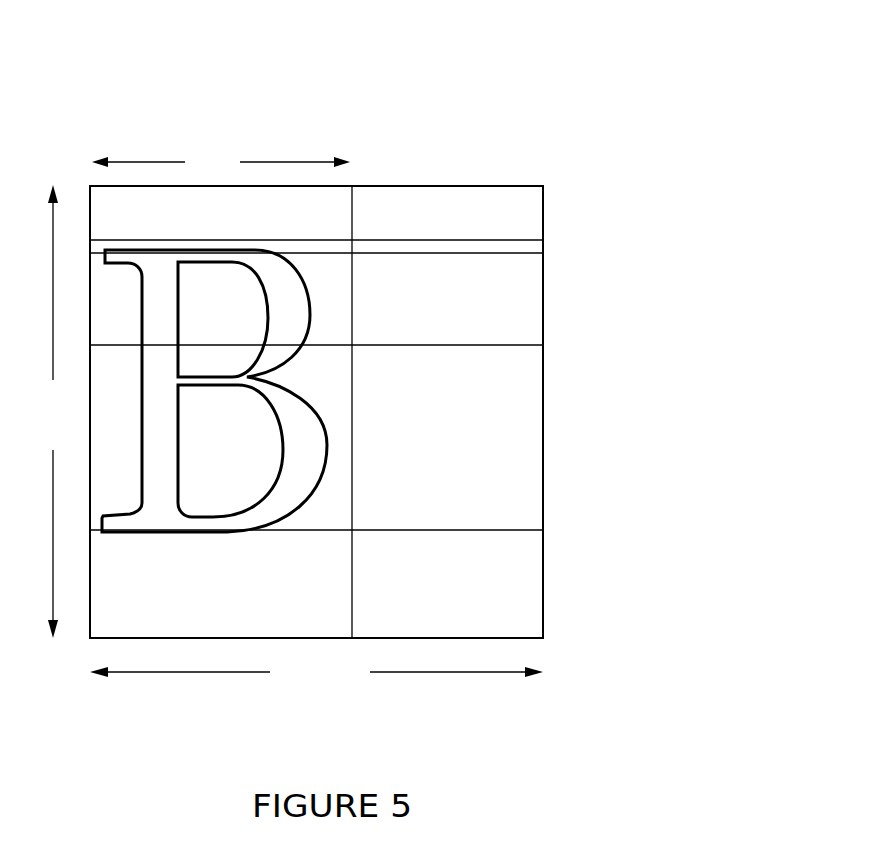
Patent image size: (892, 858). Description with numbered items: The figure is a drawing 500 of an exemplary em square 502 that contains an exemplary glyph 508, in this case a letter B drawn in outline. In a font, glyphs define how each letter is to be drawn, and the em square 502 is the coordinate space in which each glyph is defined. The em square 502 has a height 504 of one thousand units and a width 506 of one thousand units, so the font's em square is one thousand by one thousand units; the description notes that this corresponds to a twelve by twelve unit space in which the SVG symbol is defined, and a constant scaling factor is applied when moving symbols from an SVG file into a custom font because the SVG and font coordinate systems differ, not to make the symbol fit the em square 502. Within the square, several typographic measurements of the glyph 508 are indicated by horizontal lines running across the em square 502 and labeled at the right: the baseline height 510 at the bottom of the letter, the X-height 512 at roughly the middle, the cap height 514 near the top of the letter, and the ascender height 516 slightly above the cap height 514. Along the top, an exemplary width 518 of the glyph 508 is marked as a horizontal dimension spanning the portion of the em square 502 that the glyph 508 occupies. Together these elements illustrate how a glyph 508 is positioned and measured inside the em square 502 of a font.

The drawing 500 is at (104, 24).
The em square 502 is at (549, 179).
The height 504 is at (52, 362).
The width 506 is at (405, 672).
The glyph 508 is at (302, 391).
The baseline height 510 is at (710, 530).
The X-height 512 is at (710, 337).
The cap height 514 is at (710, 265).
The ascender height 516 is at (710, 228).
The width 518 is at (165, 160).